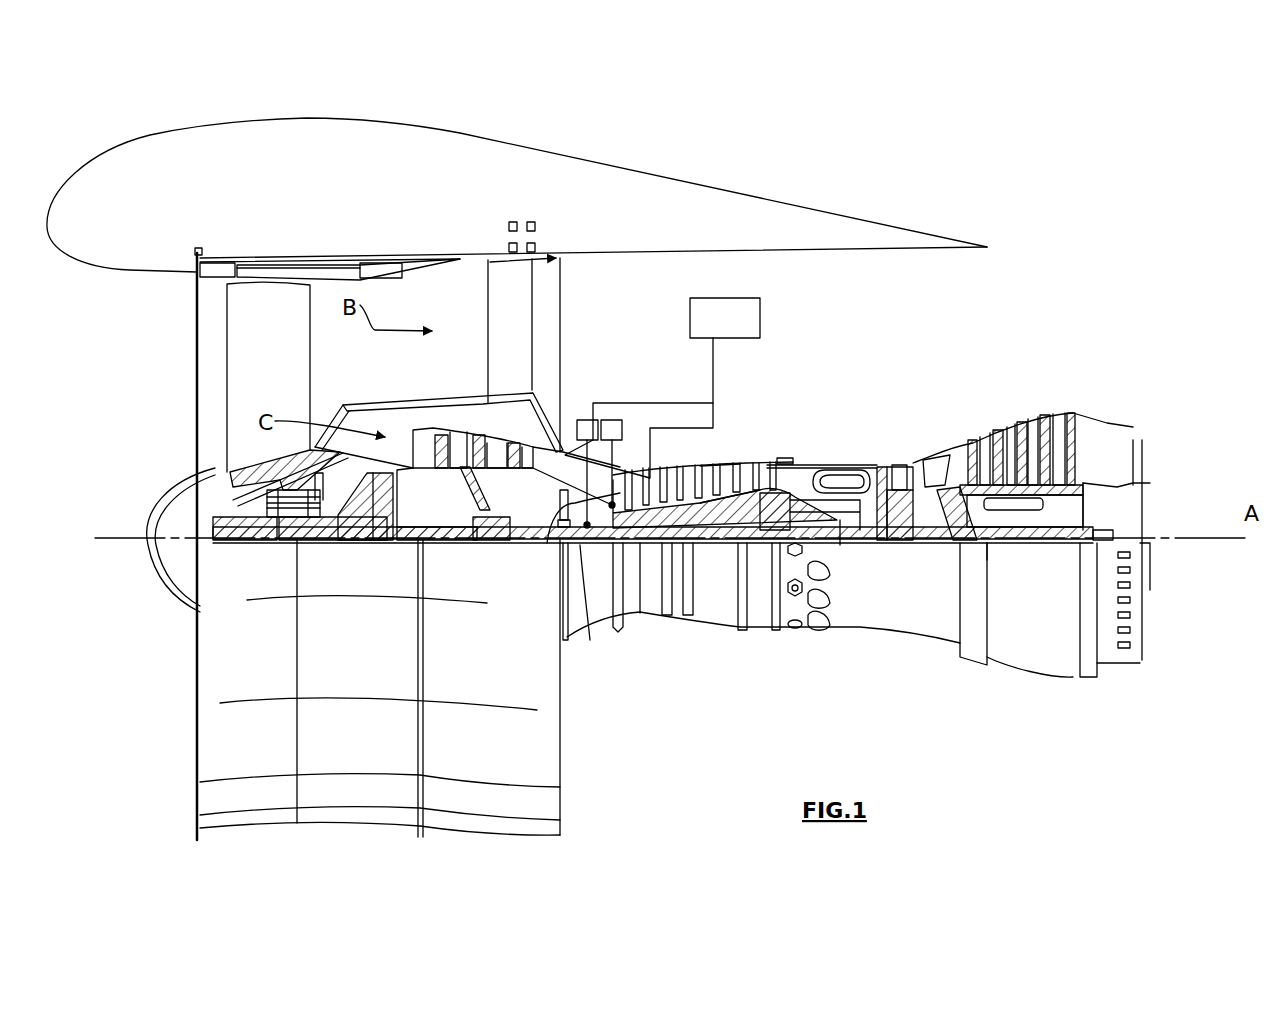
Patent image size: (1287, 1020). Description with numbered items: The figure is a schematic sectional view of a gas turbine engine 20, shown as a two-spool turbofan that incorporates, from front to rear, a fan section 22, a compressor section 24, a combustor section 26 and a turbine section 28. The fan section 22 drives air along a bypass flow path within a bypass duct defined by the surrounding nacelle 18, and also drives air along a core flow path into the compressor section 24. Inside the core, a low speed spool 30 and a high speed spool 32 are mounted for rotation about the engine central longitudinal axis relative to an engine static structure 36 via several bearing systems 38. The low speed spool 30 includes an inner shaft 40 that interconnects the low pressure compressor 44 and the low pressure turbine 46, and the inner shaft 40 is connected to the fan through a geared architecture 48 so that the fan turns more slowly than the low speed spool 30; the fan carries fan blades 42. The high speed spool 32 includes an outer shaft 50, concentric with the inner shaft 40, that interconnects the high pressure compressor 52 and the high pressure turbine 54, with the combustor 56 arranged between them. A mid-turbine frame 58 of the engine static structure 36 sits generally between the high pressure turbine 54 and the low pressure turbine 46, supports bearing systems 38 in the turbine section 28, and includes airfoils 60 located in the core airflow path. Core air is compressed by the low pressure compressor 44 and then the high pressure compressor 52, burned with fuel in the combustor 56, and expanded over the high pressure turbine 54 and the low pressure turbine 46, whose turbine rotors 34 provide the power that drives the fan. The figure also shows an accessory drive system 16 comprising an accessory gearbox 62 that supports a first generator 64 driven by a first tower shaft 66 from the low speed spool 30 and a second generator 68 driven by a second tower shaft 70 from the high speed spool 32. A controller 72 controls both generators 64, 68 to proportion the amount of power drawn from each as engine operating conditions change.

The accessory drive system 16 is at (800, 315).
The nacelle 18 is at (513, 172).
The gas turbine engine 20 is at (1005, 180).
The fan section 22 is at (405, 232).
The compressor section 24 is at (805, 375).
The combustor section 26 is at (885, 375).
The turbine section 28 is at (1095, 375).
The low speed spool 30 is at (717, 548).
The high speed spool 32 is at (757, 507).
The turbine rotors 34 is at (1035, 545).
The engine static structure 36 is at (760, 632).
The bearing systems 38 is at (278, 540).
The inner shaft 40 is at (590, 640).
The fan blades 42 is at (268, 377).
The low pressure compressor 44 is at (497, 440).
The low pressure turbine 46 is at (1027, 430).
The geared architecture 48 is at (390, 525).
The outer shaft 50 is at (848, 545).
The high pressure compressor 52 is at (728, 468).
The high pressure turbine 54 is at (900, 462).
The combustor 56 is at (833, 483).
The mid-turbine frame 58 is at (940, 448).
The airfoils 60 is at (985, 545).
The accessory gearbox 62 is at (640, 455).
The first generator 64 is at (588, 425).
The first tower shaft 66 is at (545, 545).
The second generator 68 is at (612, 425).
The second tower shaft 70 is at (640, 560).
The controller 72 is at (725, 350).